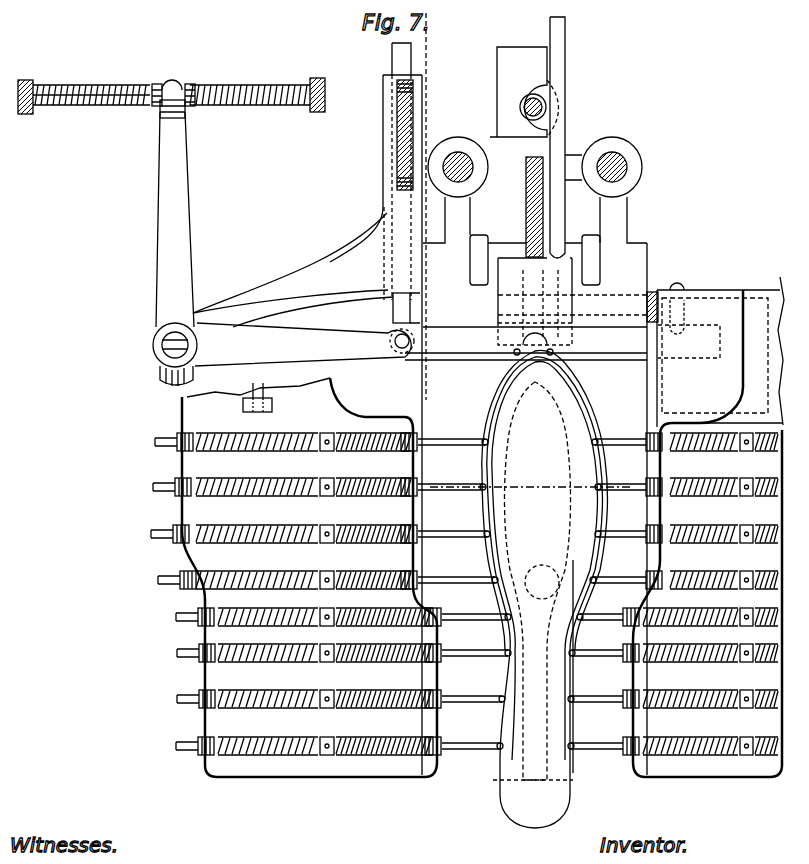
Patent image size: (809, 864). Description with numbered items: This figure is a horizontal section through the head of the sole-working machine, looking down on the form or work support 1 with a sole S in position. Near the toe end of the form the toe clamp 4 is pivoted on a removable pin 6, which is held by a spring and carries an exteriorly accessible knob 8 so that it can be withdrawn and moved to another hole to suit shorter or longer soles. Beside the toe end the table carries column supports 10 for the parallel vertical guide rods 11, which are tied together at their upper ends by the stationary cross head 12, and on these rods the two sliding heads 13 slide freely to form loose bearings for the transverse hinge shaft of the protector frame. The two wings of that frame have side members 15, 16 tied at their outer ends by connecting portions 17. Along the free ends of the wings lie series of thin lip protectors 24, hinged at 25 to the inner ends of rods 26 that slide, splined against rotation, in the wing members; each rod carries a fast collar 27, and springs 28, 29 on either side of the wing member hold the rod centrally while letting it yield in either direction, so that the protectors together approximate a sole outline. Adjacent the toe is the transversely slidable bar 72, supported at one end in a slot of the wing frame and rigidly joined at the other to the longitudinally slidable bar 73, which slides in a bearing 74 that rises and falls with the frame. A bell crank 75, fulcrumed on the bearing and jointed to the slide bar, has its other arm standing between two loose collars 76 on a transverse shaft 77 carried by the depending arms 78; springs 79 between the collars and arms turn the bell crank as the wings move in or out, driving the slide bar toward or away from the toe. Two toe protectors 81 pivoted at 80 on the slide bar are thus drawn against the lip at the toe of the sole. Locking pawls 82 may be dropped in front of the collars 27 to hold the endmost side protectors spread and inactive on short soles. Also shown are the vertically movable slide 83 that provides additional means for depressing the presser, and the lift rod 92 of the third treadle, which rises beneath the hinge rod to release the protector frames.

The work support 1 is at (640, 222).
The toe clamp 4 is at (510, 303).
The removable pin 6 is at (612, 296).
The knob 8 is at (681, 286).
The column supports 10 is at (488, 153).
The guide rods 11 is at (458, 160).
The cross head 12 is at (532, 594).
The sliding heads 13 is at (437, 206).
The side member 15 is at (182, 548).
The side member 16 is at (355, 414).
The connecting portions 17 is at (310, 780).
The lip protectors 24 is at (492, 441).
The hinge 25 is at (483, 445).
The rods 26 is at (155, 445).
The fast collars 27 is at (326, 452).
The springs 28 is at (280, 448).
The springs 29 is at (364, 450).
The slide bar 72 is at (476, 360).
The slidable bar 73 is at (412, 310).
The bearing 74 is at (395, 207).
The bell crank 75 is at (175, 206).
The collars 76 is at (160, 84).
The transverse shaft 77 is at (120, 107).
The arms 78 is at (30, 80).
The springs 79 is at (98, 85).
The pivot 80 is at (514, 350).
The toe protectors 81 is at (503, 385).
The locking pawls 82 is at (272, 398).
The slide 83 is at (526, 212).
The lift rod 92 is at (546, 105).
The sole S is at (510, 805).